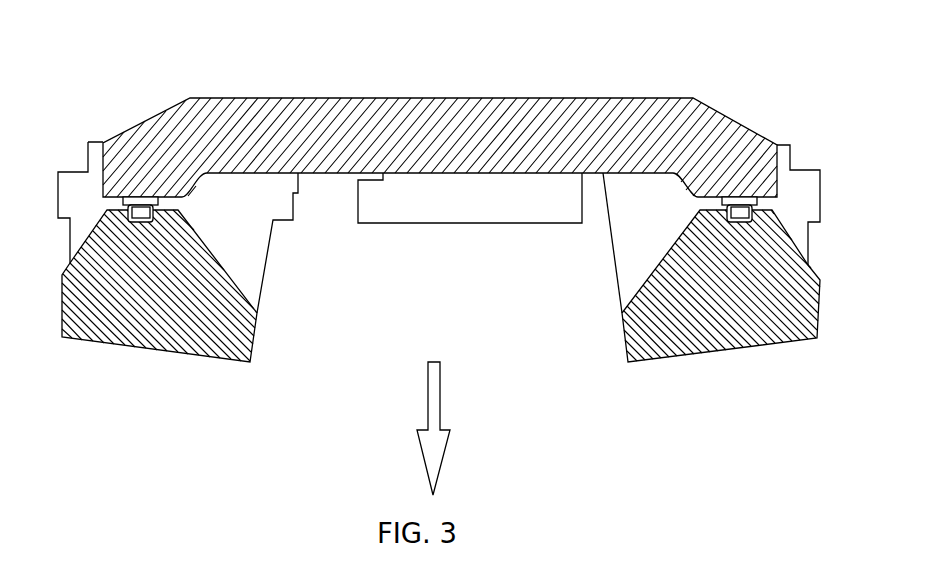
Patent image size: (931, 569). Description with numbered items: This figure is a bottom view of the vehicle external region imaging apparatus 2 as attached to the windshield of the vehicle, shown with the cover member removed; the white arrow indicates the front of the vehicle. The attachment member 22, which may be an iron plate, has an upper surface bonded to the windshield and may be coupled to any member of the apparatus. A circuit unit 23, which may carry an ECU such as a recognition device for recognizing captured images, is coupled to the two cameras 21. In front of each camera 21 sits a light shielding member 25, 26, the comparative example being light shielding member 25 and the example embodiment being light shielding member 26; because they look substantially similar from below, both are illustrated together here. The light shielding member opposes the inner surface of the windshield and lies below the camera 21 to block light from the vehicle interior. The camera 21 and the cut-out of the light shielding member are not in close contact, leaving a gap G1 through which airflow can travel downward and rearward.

The vehicle external region imaging apparatus 2 is at (456, 29).
The camera 21 is at (133, 223).
The attachment member 22 is at (90, 181).
The circuit unit 23 is at (178, 128).
The light shielding member 25 is at (441, 322).
The light shielding member 26 is at (160, 348).
The gap G1 is at (122, 225).